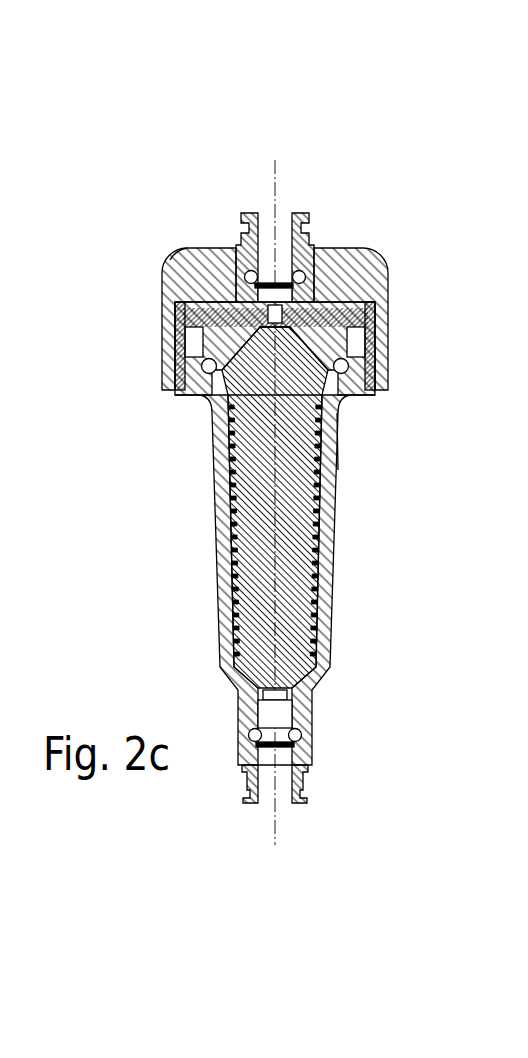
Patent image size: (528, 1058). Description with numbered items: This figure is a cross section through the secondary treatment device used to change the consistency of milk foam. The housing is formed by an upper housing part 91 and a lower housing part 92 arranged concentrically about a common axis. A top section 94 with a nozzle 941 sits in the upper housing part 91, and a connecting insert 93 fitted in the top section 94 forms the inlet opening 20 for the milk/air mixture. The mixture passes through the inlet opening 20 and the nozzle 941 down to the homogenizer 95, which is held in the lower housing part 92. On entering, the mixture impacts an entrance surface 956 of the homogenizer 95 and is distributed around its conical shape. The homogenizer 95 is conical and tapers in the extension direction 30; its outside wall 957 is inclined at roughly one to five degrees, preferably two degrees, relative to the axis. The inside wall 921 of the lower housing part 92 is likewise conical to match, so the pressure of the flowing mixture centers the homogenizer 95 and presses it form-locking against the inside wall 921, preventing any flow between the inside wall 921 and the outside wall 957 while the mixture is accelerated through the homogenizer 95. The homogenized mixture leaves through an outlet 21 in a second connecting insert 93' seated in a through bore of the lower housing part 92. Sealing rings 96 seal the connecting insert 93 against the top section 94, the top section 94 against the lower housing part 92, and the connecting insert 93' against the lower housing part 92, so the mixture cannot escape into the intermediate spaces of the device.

The inlet opening 20 is at (265, 220).
The outlet 21 is at (267, 786).
The extension direction 30 is at (289, 773).
The upper housing part 91 is at (370, 283).
The lower housing part 92 is at (330, 580).
The inside wall 921 is at (217, 421).
The connecting insert 93 is at (339, 241).
The connecting insert 93' is at (356, 759).
The top section 94 is at (260, 331).
The nozzle 941 is at (372, 312).
The homogenizer 95 is at (262, 503).
The entrance surface 956 is at (193, 276).
The outside wall 957 is at (346, 438).
The sealing ring 96 is at (250, 277).